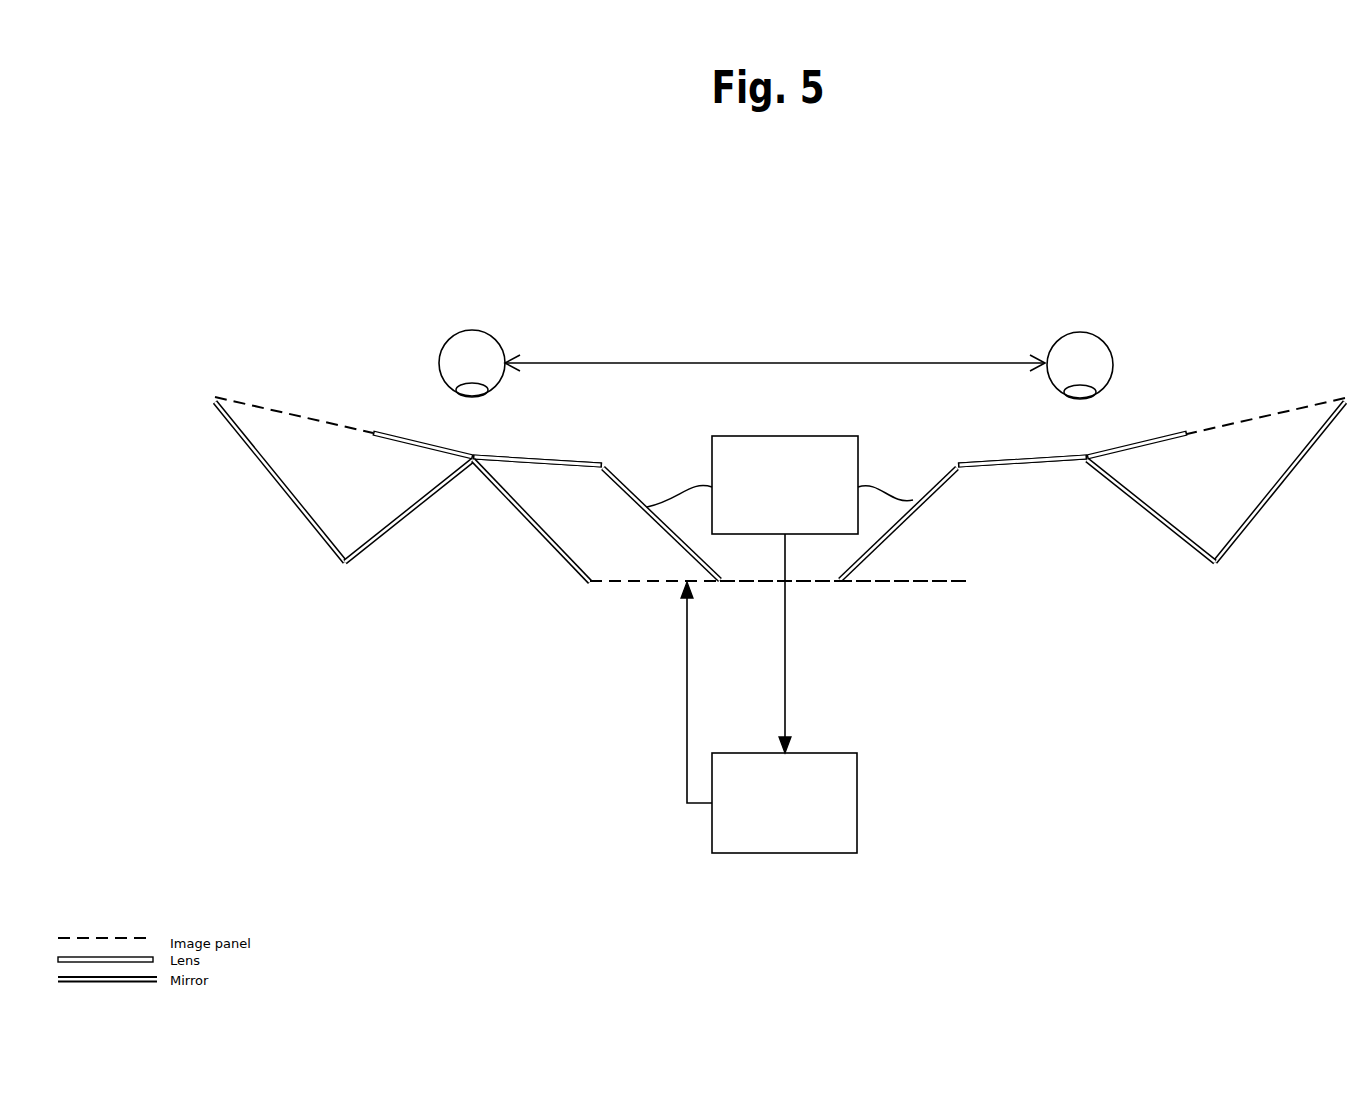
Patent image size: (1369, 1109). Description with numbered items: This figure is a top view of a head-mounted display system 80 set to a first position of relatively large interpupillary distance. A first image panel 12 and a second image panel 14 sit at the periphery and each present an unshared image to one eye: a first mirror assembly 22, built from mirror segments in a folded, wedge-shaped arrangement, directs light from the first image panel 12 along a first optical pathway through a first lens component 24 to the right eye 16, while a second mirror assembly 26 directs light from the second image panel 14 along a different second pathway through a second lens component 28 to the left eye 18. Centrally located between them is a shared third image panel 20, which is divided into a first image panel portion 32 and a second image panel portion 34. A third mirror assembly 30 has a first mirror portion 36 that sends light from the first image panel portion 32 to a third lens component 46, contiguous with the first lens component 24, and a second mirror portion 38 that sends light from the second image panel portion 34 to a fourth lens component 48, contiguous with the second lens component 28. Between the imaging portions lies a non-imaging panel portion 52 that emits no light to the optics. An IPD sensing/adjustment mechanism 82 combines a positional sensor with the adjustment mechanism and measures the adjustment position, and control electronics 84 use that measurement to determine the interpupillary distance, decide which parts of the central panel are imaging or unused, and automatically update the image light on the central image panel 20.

The first image panel 12 is at (297, 417).
The second image panel 14 is at (1265, 417).
The right eye 16 is at (502, 343).
The left eye 18 is at (1098, 335).
The third image panel 20 is at (792, 611).
The first mirror assembly 22 is at (328, 562).
The first lens component 24 is at (375, 430).
The second mirror assembly 26 is at (1236, 581).
The second lens component 28 is at (1160, 445).
The third mirror assembly 30 is at (562, 579).
The first image panel portion 32 is at (677, 583).
The second image panel portion 34 is at (943, 583).
The first mirror portion 36 is at (655, 525).
The second mirror portion 38 is at (892, 545).
The third lens component 46 is at (583, 442).
The fourth lens component 48 is at (990, 462).
The non-imaging panel portion 52 is at (762, 585).
The head-mounted display system 80 is at (857, 296).
The IPD sensing/adjustment mechanism 82 is at (722, 436).
The control electronics 84 is at (857, 825).